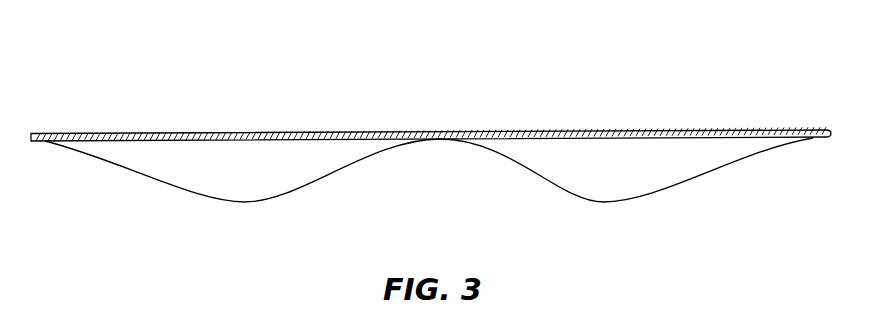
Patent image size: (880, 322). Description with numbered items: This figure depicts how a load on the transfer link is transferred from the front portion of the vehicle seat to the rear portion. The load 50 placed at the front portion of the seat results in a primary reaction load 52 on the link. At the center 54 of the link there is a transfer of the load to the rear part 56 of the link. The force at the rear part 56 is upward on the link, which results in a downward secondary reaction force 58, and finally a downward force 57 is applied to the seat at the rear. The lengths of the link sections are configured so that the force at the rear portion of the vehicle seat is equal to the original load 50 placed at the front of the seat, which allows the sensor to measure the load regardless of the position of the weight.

The load 50 is at (50, 133).
The primary reaction load 52 is at (228, 198).
The center of the link 54 is at (416, 131).
The rear part of the link 56 is at (438, 142).
The downward force applied to the seat 57 is at (787, 148).
The secondary reaction force 58 is at (638, 129).